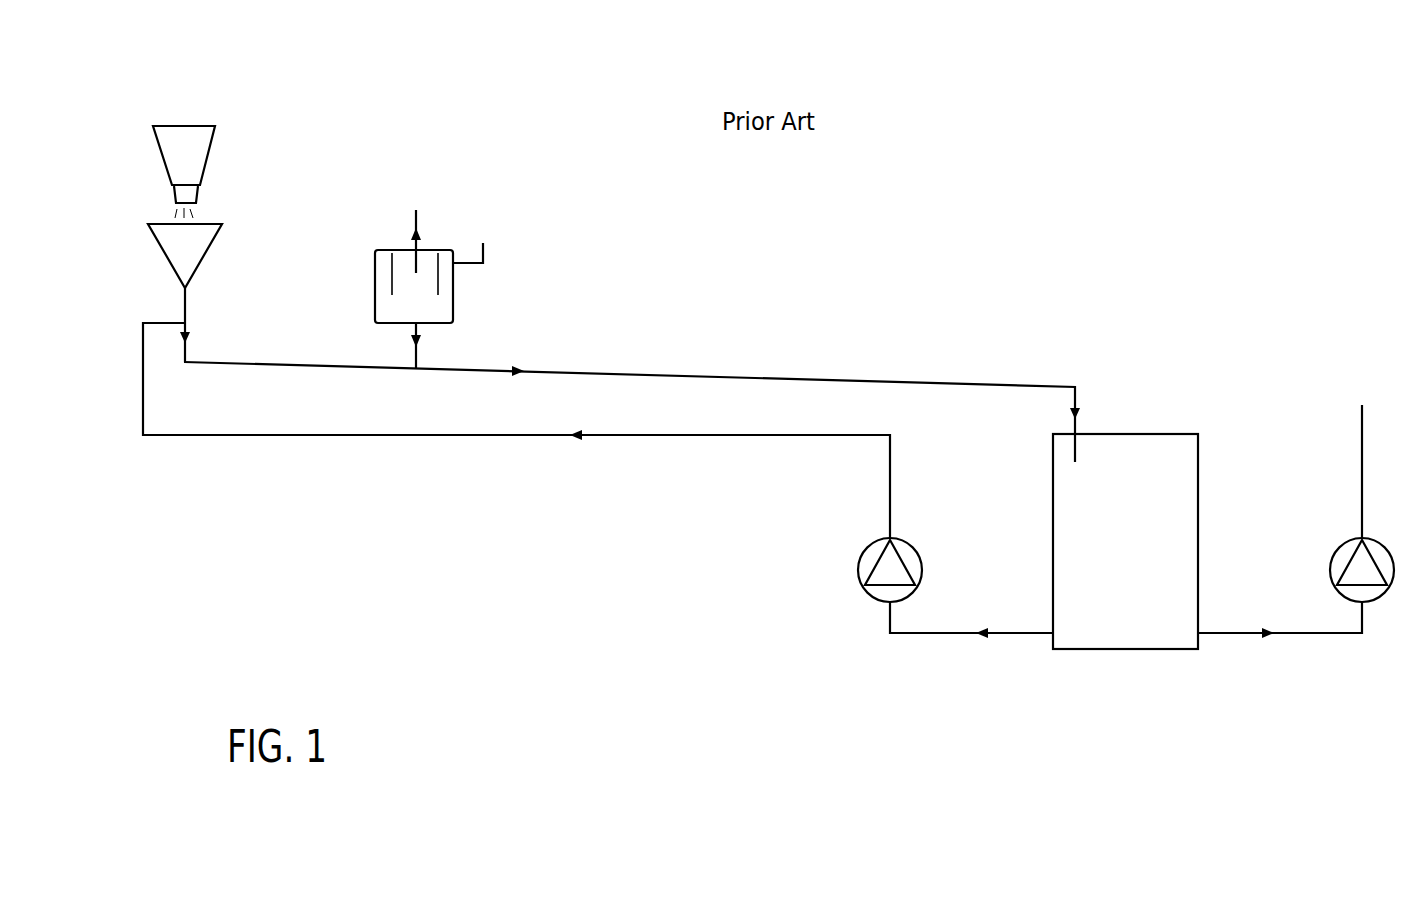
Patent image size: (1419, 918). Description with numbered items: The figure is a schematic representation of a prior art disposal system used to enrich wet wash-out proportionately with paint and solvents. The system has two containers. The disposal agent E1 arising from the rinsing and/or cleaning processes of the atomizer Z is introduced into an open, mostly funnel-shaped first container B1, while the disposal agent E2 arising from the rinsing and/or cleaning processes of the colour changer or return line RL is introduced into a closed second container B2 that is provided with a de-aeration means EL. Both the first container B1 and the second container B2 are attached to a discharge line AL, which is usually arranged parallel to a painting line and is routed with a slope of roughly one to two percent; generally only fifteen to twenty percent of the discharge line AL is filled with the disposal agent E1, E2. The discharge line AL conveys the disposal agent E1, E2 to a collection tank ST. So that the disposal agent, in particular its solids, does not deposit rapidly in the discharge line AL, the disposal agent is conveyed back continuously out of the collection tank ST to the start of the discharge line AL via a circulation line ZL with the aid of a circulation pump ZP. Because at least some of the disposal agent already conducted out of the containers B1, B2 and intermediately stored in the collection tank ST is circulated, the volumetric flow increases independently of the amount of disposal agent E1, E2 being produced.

The atomizer Z is at (222, 140).
The disposal agent E1 is at (200, 212).
The first container B1 is at (213, 263).
The de-aeration means EL is at (410, 221).
The second container B2 is at (432, 250).
The return line RL is at (487, 253).
The disposal agent E2 is at (447, 260).
The discharge line AL is at (692, 372).
The collection tank ST is at (1113, 432).
The circulation line ZL is at (338, 442).
The circulation pump ZP is at (857, 600).